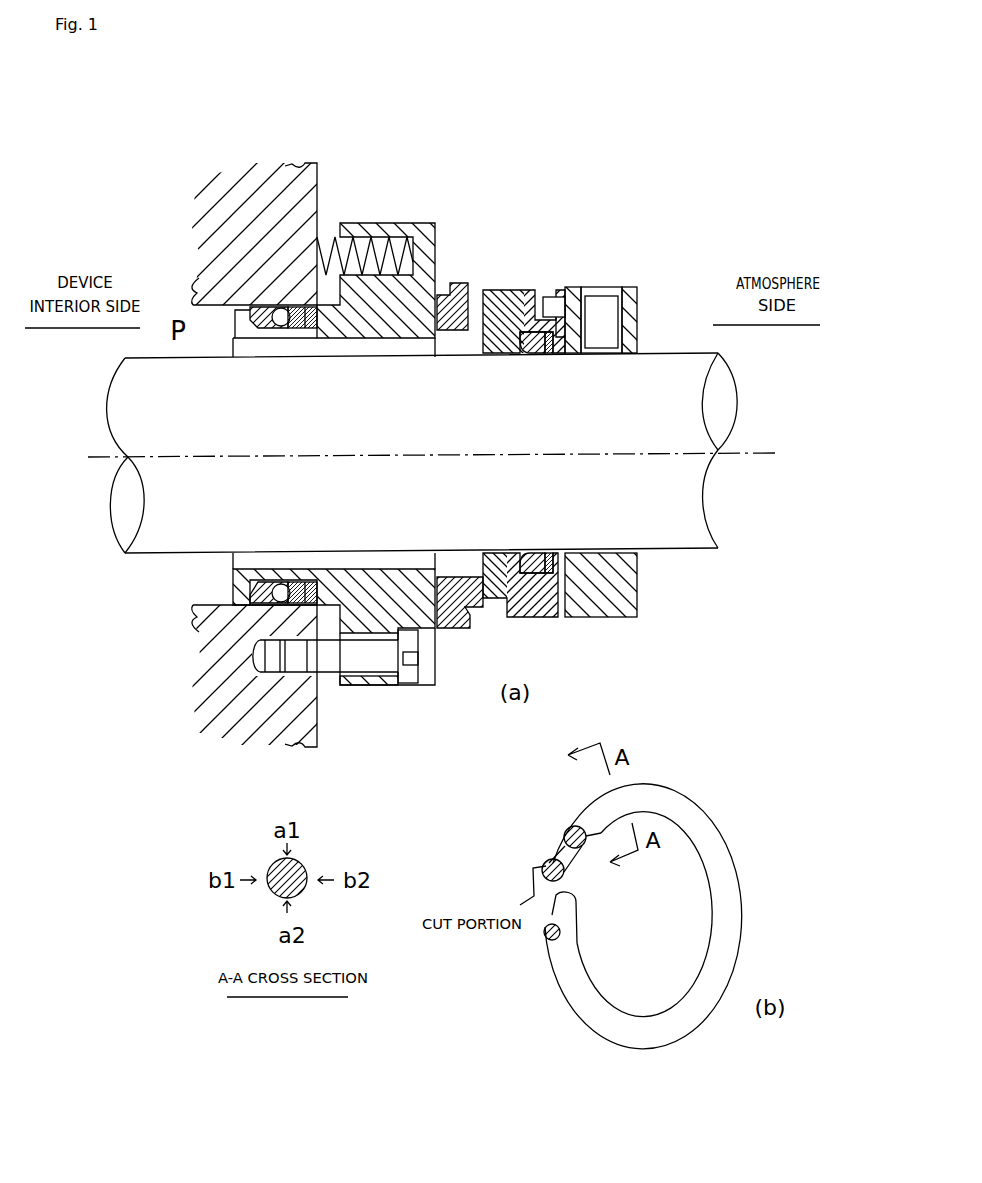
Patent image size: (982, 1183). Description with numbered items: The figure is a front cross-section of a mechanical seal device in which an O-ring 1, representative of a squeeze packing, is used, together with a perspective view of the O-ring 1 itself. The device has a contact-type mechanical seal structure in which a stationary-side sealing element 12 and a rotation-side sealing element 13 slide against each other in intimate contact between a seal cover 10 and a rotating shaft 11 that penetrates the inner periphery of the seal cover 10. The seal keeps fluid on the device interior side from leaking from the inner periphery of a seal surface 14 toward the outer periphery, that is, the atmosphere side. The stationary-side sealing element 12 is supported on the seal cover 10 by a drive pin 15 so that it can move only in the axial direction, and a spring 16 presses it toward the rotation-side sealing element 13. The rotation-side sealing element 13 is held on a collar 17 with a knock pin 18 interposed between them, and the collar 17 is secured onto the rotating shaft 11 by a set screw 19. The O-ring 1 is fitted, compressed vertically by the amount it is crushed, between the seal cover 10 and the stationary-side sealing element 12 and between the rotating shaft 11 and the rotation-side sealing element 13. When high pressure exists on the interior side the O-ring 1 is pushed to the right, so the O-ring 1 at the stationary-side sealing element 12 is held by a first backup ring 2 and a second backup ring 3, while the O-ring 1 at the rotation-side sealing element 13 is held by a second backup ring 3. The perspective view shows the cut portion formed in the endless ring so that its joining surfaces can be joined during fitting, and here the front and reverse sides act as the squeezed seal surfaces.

The O-ring 1 is at (233, 333).
The first backup ring 2 is at (292, 327).
The second backup ring 3 is at (325, 327).
The seal cover 10 is at (255, 190).
The rotating shaft 11 is at (406, 431).
The stationary-side sealing element 12 is at (448, 285).
The rotation-side sealing element 13 is at (490, 350).
The seal surface 14 is at (552, 297).
The drive pin 15 is at (377, 655).
The spring 16 is at (368, 240).
The collar 17 is at (636, 333).
The knock pin 18 is at (558, 290).
The set screw 19 is at (608, 313).